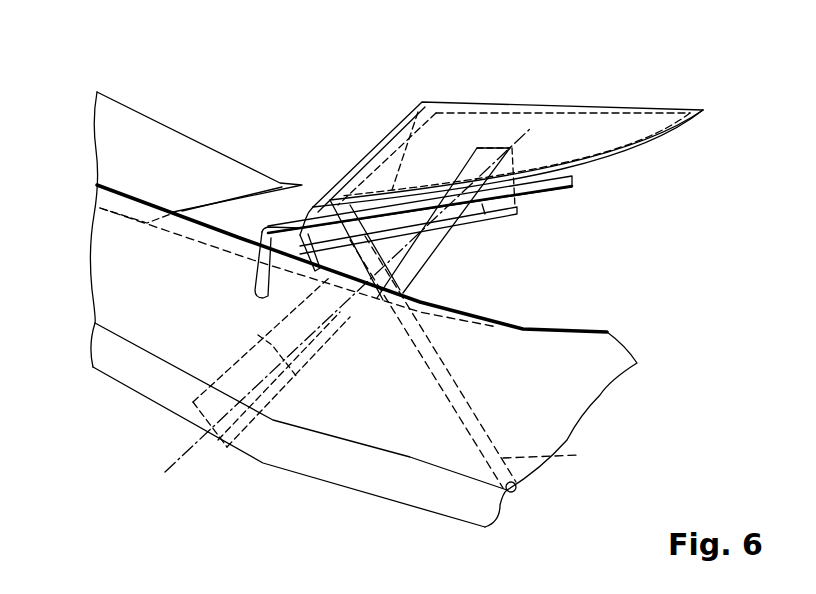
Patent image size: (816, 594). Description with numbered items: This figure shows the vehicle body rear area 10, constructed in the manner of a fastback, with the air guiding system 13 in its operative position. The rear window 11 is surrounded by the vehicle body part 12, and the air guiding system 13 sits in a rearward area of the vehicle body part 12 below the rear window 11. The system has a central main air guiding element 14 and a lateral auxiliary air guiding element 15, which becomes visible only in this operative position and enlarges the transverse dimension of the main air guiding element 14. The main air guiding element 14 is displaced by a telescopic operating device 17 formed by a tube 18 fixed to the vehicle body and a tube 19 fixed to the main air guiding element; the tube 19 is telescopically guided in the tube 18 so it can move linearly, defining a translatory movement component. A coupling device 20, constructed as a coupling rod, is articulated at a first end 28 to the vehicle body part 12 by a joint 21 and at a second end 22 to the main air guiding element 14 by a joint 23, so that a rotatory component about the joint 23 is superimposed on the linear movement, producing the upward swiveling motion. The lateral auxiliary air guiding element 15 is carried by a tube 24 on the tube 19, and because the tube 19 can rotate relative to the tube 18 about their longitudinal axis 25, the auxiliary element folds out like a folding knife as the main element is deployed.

The vehicle body rear area 10 is at (86, 442).
The rear window 11 is at (128, 124).
The vehicle body part 12 is at (607, 355).
The air guiding system 13 is at (392, 100).
The central main air guiding element 14 is at (608, 122).
The lateral auxiliary air guiding element 15 is at (460, 212).
The telescopic operating device 17 is at (213, 447).
The tube fixed to the vehicle body 18 is at (238, 365).
The tube fixed to the main air guiding element 19 is at (403, 260).
The coupling device 20 is at (476, 422).
The joint 21 is at (514, 492).
The second end 22 is at (363, 195).
The joint 23 is at (338, 182).
The tube fixed to the auxiliary air guiding element 24 is at (507, 212).
The longitudinal axis 25 is at (217, 417).
The first end 28 is at (556, 456).